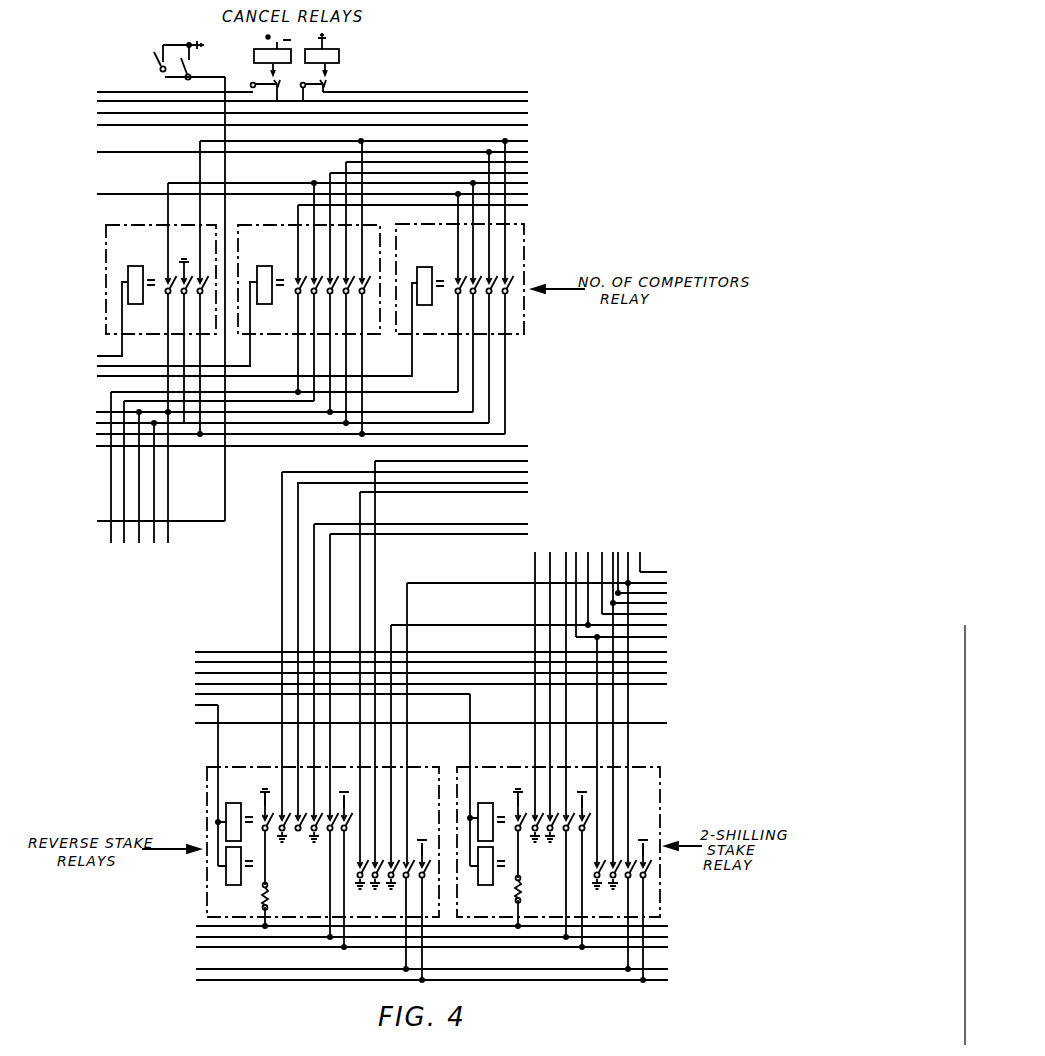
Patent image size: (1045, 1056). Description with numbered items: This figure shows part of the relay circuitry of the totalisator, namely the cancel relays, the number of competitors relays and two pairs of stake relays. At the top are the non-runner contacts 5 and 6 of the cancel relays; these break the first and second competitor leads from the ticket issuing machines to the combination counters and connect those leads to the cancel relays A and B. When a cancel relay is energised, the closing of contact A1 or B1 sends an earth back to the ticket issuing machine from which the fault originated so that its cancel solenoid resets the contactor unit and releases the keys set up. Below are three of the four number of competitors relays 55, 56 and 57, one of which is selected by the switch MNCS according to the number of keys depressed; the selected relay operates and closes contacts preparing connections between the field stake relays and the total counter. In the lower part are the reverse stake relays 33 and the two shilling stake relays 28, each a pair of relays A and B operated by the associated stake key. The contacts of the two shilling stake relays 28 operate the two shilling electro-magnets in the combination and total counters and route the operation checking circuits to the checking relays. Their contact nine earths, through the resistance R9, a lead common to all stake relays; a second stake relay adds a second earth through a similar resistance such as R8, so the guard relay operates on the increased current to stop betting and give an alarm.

The non-runner contact 5 is at (271, 68).
The non-runner contact 6 is at (320, 67).
The number of competitors relay 55 is at (156, 342).
The number of competitors relay 56 is at (238, 287).
The number of competitors relay 57 is at (310, 287).
The reverse stake relays 33 is at (323, 720).
The 2 shilling stake relays 28 is at (558, 873).
The resistance R8 is at (278, 904).
The resistance R9 is at (531, 901).
The contact A1 is at (168, 57).
The contact B1 is at (196, 63).